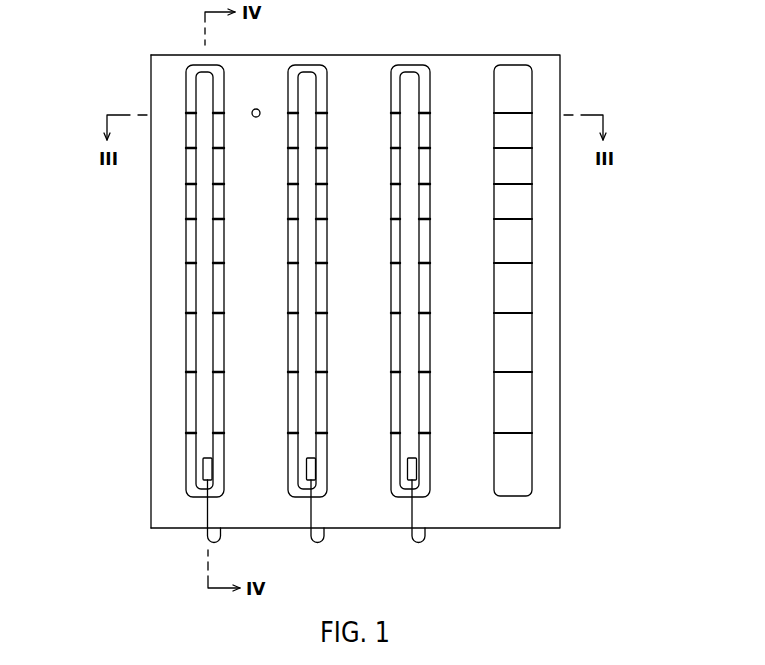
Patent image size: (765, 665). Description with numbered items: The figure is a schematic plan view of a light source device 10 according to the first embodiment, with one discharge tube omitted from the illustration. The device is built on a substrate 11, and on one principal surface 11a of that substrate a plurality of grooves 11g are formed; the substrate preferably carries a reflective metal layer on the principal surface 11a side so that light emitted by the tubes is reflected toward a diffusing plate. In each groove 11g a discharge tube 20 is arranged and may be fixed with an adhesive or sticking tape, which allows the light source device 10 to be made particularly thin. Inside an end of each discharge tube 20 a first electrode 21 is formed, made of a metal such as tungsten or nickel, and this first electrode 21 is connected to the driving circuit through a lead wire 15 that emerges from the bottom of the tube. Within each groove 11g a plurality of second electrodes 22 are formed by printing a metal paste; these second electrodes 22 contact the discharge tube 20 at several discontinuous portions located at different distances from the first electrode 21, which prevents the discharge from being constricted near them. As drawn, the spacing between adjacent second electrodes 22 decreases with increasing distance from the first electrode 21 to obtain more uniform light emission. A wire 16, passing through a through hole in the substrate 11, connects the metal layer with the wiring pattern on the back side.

The light source device 10 is at (81, 70).
The substrate 11 is at (561, 354).
The principal surface 11a is at (168, 278).
The groove 11g is at (510, 68).
The lead wire 15 is at (420, 540).
The wire 16 is at (256, 109).
The discharge tube 20 is at (205, 405).
The first electrode 21 is at (203, 469).
The second electrode 22 is at (513, 149).